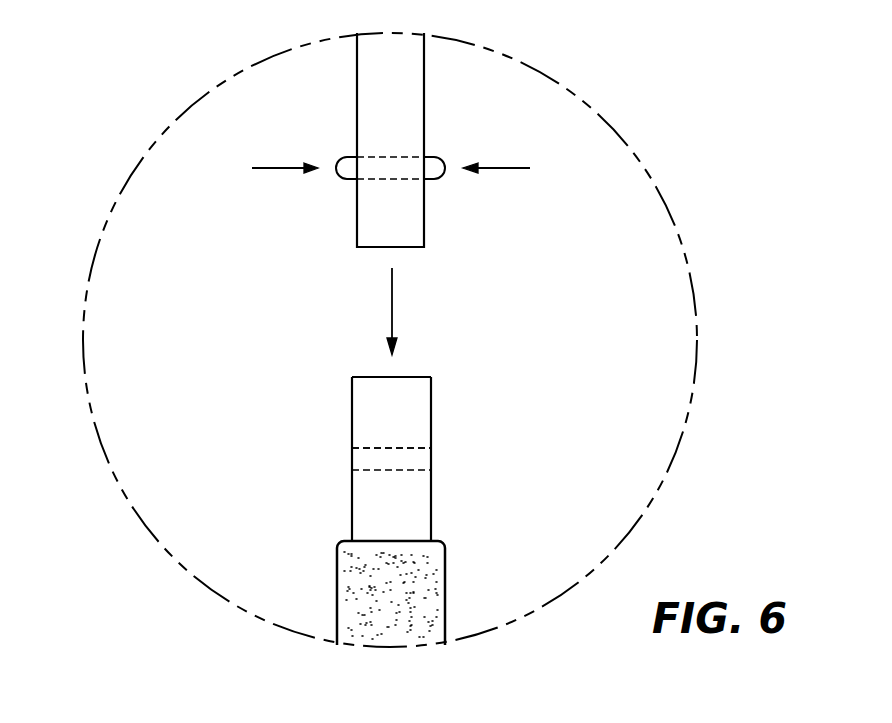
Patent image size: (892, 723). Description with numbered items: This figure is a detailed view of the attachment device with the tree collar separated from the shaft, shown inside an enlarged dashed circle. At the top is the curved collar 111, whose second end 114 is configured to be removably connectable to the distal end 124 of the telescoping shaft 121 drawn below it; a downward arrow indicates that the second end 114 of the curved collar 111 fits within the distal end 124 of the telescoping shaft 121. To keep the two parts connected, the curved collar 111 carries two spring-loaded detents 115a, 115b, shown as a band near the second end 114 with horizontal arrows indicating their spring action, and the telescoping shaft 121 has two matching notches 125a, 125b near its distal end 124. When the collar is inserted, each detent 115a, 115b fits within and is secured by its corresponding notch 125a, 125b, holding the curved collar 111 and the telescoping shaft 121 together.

The curved collar 111 is at (417, 75).
The second end 114 is at (418, 229).
The detent 115a is at (352, 158).
The detent 115b is at (432, 158).
The telescoping shaft 121 is at (425, 513).
The distal end 124 is at (420, 380).
The notch 125a is at (357, 459).
The notch 125b is at (425, 459).